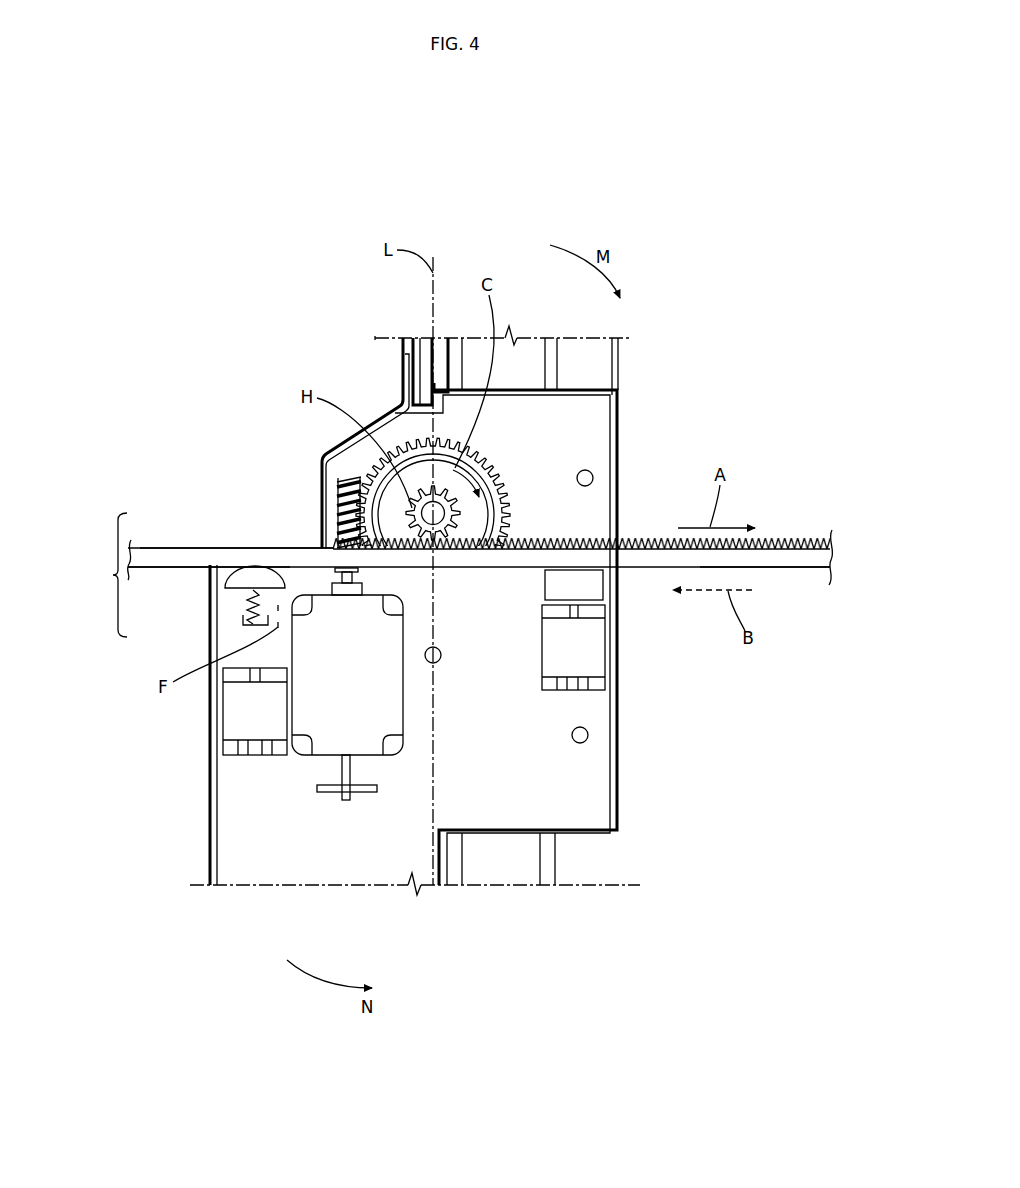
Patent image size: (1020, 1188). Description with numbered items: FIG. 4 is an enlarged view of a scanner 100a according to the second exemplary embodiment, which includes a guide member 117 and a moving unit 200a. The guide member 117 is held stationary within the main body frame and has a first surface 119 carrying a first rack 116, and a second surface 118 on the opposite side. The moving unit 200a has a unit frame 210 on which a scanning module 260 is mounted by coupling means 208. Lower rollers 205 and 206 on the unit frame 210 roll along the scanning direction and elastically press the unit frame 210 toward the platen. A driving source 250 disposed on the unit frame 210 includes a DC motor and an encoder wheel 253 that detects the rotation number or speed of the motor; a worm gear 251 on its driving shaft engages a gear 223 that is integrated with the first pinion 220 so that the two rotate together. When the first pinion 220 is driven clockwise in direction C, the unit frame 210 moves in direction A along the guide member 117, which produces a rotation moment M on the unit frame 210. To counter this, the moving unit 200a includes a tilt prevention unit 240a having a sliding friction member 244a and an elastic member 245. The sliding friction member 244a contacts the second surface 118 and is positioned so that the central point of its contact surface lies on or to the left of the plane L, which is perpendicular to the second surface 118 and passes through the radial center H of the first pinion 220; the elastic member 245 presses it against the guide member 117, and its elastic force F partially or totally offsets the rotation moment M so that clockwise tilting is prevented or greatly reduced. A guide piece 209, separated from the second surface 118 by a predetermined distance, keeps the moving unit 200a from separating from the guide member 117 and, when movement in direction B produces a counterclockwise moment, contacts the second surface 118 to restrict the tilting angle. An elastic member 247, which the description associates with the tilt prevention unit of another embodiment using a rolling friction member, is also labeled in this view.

The scanner 100a is at (655, 278).
The moving unit 200a is at (353, 380).
The unit frame 210 is at (613, 362).
The scanning module 260 is at (531, 355).
The coupling means 208 is at (593, 478).
The gear 223 is at (338, 482).
The first pinion 220 is at (372, 482).
The worm gear 251 is at (410, 515).
The first surface 119 is at (207, 547).
The sliding friction member 244a is at (228, 575).
The tilt prevention unit 240a is at (450, 575).
The elastic member 245 is at (225, 588).
The elastic member 247 is at (243, 620).
The driving source 250 is at (308, 712).
The encoder wheel 253 is at (330, 792).
The lower roller 205 is at (233, 728).
The lower roller 206 is at (593, 655).
The guide piece 209 is at (602, 585).
The first rack 116 is at (765, 540).
The guide member 117 is at (811, 560).
The second surface 118 is at (800, 568).